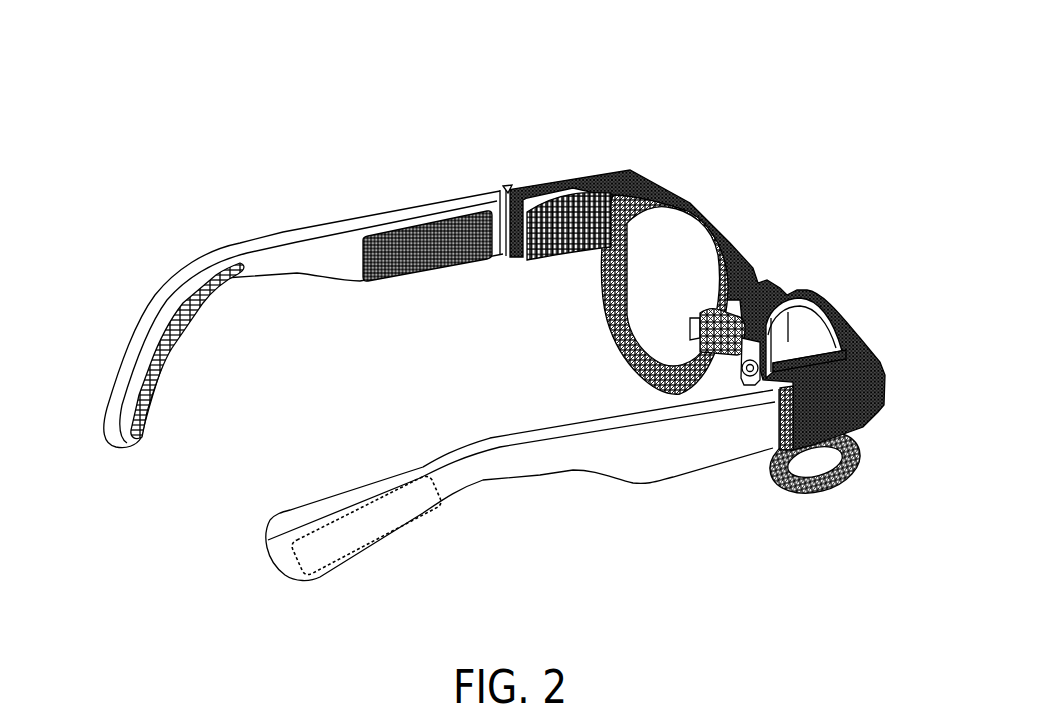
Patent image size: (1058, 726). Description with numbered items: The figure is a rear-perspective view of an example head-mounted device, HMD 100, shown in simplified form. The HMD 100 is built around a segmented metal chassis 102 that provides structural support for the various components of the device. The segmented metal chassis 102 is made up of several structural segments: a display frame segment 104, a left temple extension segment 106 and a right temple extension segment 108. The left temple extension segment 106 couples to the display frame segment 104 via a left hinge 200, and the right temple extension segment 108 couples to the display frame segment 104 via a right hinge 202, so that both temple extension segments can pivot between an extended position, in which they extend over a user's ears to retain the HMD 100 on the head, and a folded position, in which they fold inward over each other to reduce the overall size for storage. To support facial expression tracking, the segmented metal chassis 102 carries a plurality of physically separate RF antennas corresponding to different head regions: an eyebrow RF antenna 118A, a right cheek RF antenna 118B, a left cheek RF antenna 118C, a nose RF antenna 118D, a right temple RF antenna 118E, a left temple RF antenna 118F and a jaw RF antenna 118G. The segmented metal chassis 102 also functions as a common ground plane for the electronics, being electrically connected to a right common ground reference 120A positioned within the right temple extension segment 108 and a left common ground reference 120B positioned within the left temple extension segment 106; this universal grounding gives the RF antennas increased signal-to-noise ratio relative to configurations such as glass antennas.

The head-mounted device 100 is at (517, 352).
The segmented metal chassis 102 is at (677, 283).
The display frame segment 104 is at (710, 203).
The left temple extension segment 106 is at (305, 318).
The right temple extension segment 108 is at (503, 500).
The eyebrow RF antenna 118A is at (810, 297).
The right cheek RF antenna 118B is at (790, 477).
The left cheek RF antenna 118C is at (607, 322).
The nose RF antenna 118D is at (710, 340).
The right temple RF antenna 118E is at (817, 358).
The left temple RF antenna 118F is at (550, 247).
The jaw RF antenna 118G is at (383, 263).
The right common ground reference 120A is at (293, 553).
The left common ground reference 120B is at (155, 375).
The left hinge 200 is at (508, 188).
The right hinge 202 is at (779, 389).